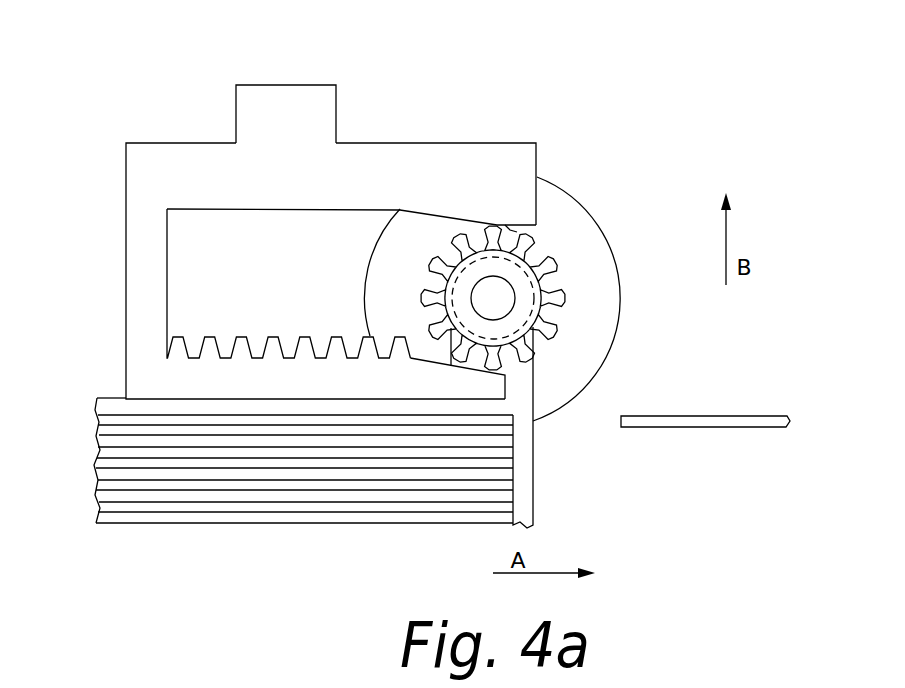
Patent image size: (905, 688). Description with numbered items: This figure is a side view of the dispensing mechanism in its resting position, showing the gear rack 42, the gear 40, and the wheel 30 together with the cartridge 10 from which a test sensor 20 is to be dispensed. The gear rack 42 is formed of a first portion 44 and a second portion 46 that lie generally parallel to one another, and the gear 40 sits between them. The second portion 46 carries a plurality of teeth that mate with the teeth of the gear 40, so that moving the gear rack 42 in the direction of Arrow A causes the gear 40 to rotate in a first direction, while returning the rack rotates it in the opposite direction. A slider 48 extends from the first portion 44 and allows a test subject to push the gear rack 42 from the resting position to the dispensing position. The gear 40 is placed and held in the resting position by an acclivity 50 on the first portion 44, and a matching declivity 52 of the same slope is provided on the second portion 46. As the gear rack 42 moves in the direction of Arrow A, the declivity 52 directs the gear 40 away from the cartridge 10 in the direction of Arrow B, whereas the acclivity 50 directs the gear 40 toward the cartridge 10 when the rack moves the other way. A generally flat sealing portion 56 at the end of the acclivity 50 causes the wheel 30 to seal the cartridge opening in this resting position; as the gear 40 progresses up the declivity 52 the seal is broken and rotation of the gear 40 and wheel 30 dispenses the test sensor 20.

The cartridge 10 is at (533, 467).
The test sensor 20 is at (762, 416).
The wheel 30 is at (615, 253).
The gear 40 is at (540, 315).
The gear rack 42 is at (126, 197).
The first portion 44 is at (366, 143).
The second portion 46 is at (246, 390).
The slider 48 is at (248, 84).
The acclivity 50 is at (458, 195).
The declivity 52 is at (440, 396).
The sealing portion 56 is at (517, 232).